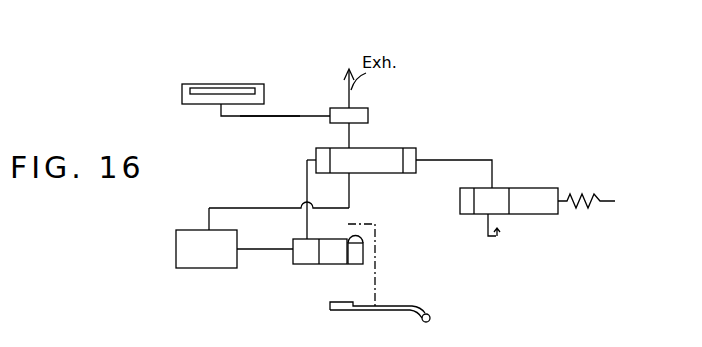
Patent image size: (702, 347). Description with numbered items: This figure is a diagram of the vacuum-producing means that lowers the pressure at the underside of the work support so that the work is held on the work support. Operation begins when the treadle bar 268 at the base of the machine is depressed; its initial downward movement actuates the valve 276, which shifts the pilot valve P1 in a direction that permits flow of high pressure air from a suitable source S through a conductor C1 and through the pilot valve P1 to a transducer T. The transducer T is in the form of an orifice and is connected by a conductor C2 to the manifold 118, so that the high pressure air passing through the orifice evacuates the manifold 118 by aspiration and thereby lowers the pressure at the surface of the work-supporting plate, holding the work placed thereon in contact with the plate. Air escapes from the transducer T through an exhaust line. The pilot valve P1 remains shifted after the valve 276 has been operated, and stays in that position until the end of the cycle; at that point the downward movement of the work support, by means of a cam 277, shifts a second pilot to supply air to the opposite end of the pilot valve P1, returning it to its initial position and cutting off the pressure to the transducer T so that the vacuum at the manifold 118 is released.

The manifold 118 is at (182, 96).
The valve 276 is at (355, 265).
The cam 277 is at (460, 200).
The treadle bar 268 is at (378, 311).
The transducer T is at (358, 115).
The pilot valve P1 is at (399, 193).
The source S is at (234, 238).
The conductor C1 is at (250, 207).
The conductor C2 is at (263, 117).